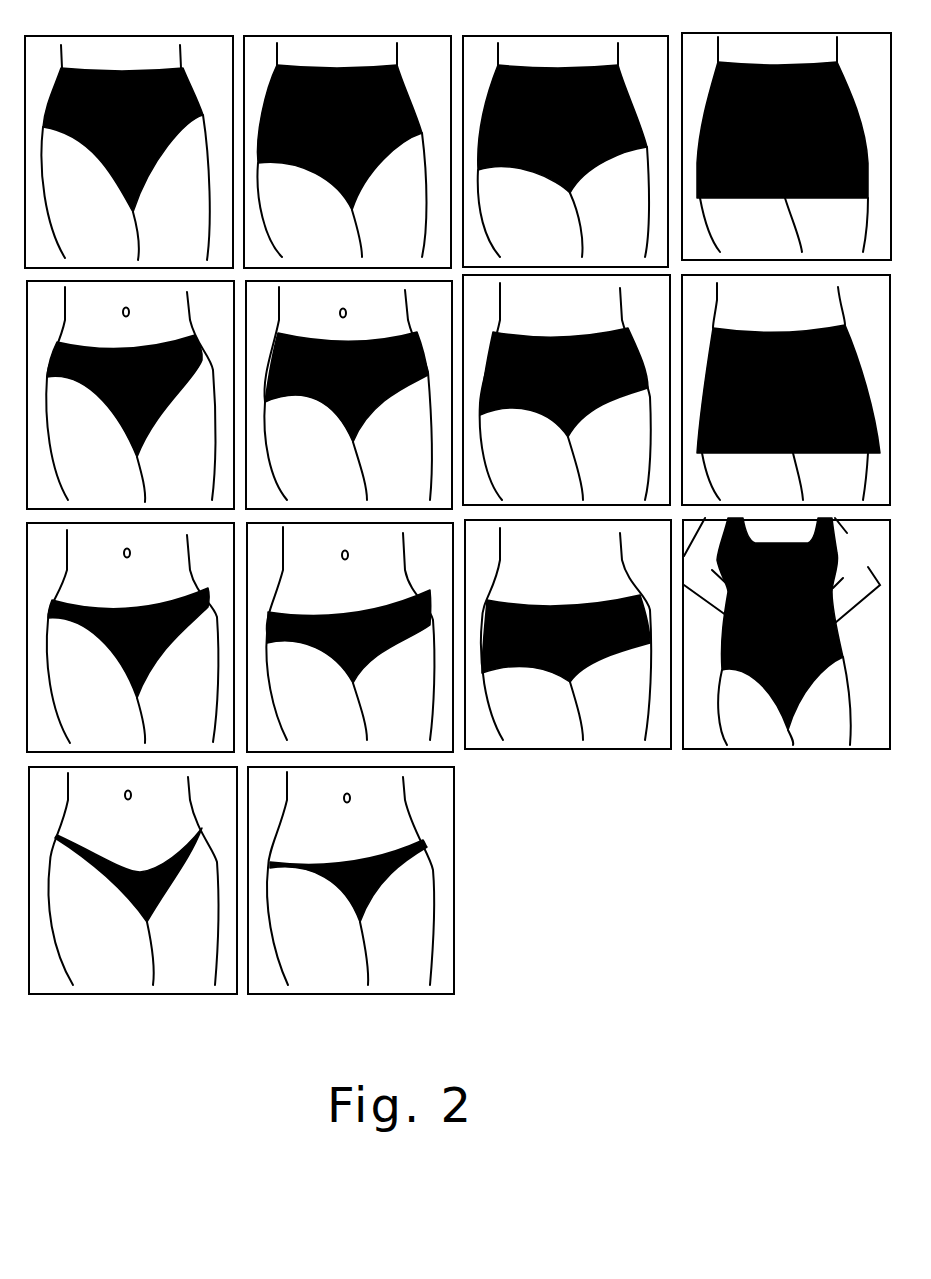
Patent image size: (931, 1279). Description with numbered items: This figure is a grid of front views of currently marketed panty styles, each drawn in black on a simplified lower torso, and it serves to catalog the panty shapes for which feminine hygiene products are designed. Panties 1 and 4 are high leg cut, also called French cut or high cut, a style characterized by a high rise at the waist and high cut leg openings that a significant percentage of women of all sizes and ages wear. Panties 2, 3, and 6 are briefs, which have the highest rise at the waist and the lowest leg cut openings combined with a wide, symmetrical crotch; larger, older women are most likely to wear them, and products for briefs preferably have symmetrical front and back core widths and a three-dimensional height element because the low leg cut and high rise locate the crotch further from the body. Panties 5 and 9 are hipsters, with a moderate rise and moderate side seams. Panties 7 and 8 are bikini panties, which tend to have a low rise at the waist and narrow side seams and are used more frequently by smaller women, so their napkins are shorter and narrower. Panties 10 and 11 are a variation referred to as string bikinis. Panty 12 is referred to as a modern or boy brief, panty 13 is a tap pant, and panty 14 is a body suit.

The high leg cut panty 1 is at (131, 130).
The brief panty 2 is at (346, 128).
The brief panty 3 is at (566, 120).
The high leg cut panty 4 is at (133, 373).
The hipster panty 5 is at (350, 366).
The brief panty 6 is at (566, 363).
The bikini panty 7 is at (134, 616).
The bikini panty 8 is at (351, 608).
The hipster panty 9 is at (568, 607).
The string bikini panty 10 is at (145, 848).
The string bikini panty 11 is at (364, 848).
The modern or boy brief panty 12 is at (792, 120).
The tap pant 13 is at (792, 371).
The body suit 14 is at (802, 624).